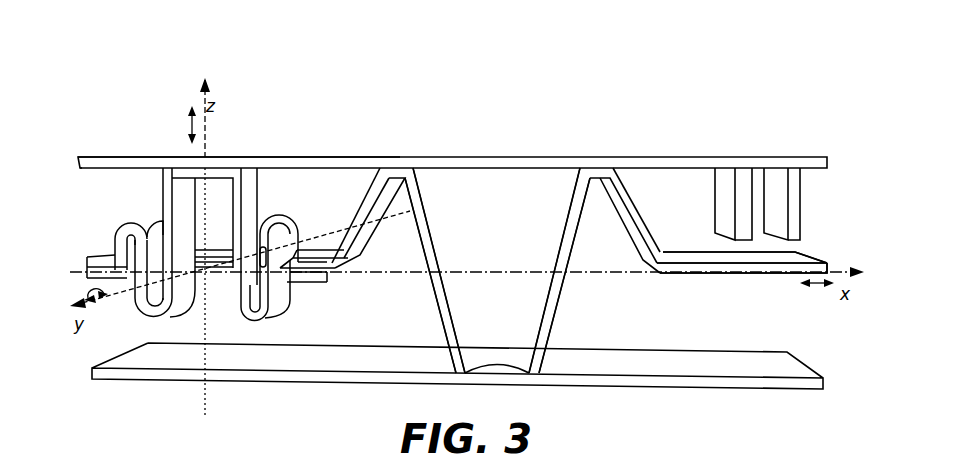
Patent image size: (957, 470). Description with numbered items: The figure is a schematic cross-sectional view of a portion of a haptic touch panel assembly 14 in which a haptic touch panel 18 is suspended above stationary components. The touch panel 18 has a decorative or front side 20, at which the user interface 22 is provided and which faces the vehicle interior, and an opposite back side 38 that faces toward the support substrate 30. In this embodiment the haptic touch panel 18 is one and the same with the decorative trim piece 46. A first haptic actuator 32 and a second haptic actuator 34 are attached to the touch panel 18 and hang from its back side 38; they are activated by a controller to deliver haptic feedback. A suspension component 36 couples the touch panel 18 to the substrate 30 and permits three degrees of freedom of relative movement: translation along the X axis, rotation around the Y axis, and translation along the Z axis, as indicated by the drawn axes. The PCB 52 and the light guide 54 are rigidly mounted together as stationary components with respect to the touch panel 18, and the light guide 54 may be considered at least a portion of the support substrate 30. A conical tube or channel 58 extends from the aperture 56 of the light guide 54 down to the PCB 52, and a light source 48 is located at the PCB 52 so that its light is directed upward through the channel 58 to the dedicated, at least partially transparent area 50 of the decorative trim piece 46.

The haptic touch panel assembly 14 is at (150, 58).
The haptic touch panel 18 is at (80, 162).
The decorative or front side 20 is at (416, 160).
The user interface 22 is at (483, 160).
The support substrate 30 is at (811, 256).
The first haptic actuator 32 is at (726, 178).
The second haptic actuator 34 is at (779, 178).
The suspension component 36 is at (140, 222).
The back side 38 is at (88, 170).
The decorative trim piece 46 is at (288, 159).
The light source 48 is at (488, 370).
The at least partially transparent area 50 is at (543, 160).
The PCB 52 is at (651, 357).
The light guide 54 is at (553, 304).
The aperture 56 is at (585, 160).
The conical tube or channel 58 is at (571, 238).